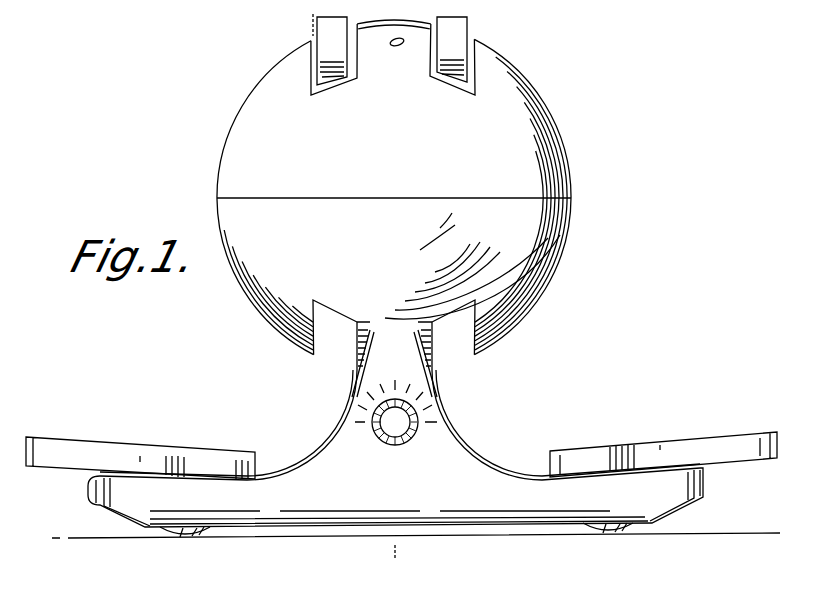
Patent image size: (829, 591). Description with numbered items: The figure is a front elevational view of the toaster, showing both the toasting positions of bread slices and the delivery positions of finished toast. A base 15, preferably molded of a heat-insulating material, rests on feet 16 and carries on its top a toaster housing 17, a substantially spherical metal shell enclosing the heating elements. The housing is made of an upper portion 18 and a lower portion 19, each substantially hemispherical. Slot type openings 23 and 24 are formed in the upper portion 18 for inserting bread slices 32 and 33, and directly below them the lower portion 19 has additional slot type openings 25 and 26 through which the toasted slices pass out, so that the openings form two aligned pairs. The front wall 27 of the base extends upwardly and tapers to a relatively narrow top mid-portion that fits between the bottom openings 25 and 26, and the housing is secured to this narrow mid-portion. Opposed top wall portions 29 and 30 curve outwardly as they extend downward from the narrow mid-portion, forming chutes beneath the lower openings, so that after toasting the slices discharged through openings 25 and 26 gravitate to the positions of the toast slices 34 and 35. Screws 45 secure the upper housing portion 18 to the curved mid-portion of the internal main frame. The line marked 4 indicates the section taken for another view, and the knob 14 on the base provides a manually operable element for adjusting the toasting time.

The section line 4- 4 is at (313, 29).
The adjusting knob 14 is at (395, 430).
The base 15 is at (483, 433).
The feet 16 is at (190, 541).
The toaster housing 17 is at (556, 214).
The upper portion 18 is at (533, 110).
The lower portion 19 is at (527, 290).
The slot type opening 23 is at (311, 40).
The slot type opening 24 is at (473, 42).
The slot type opening 25 is at (313, 355).
The slot type opening 26 is at (475, 350).
The front wall 27 is at (468, 506).
The top wall portion 29 is at (300, 447).
The top wall portion 30 is at (500, 458).
The bread slice 32 is at (340, 70).
The bread slice 33 is at (447, 64).
The toast slice 34 is at (80, 446).
The toast slice 35 is at (690, 446).
The screws 45 is at (396, 47).